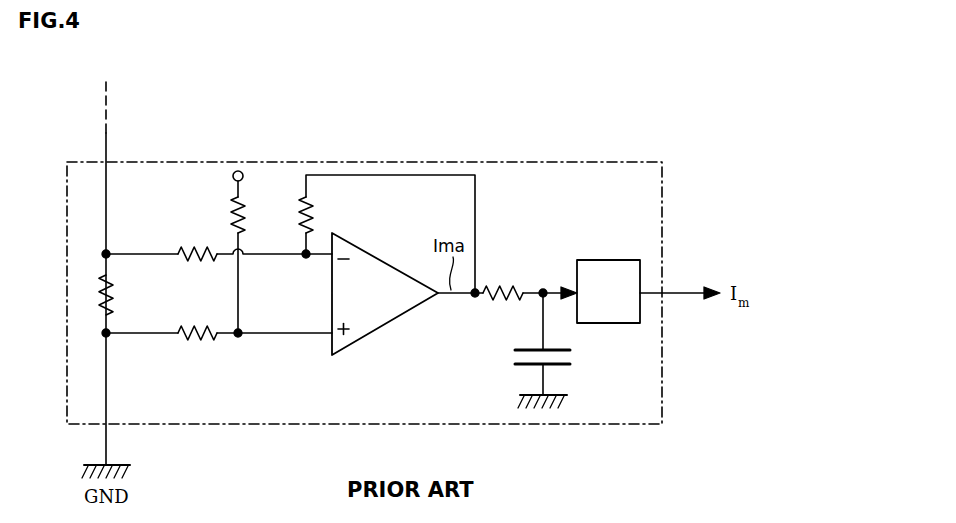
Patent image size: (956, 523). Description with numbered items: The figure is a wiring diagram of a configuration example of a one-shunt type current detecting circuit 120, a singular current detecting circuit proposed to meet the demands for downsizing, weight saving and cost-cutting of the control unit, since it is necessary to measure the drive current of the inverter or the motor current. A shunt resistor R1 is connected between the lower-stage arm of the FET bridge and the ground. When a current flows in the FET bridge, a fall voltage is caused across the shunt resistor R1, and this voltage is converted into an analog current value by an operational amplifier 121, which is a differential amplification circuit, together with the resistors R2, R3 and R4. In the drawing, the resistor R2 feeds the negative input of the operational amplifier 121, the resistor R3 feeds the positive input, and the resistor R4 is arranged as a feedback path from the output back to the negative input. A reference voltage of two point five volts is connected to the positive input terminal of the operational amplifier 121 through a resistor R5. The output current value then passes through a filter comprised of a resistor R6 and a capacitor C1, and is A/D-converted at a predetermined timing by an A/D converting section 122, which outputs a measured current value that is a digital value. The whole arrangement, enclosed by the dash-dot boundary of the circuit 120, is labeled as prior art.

The 1-shunt type current detecting circuit 120 is at (630, 158).
The operational amplifier 121 is at (352, 240).
The A/D converting section 122 is at (624, 260).
The shunt resistor R1 is at (91, 295).
The resistor R2 is at (219, 267).
The resistor R3 is at (219, 346).
The resistor R4 is at (371, 234).
The resistor R5 is at (232, 233).
The resistor R6 is at (530, 307).
The capacitor C1 is at (528, 350).